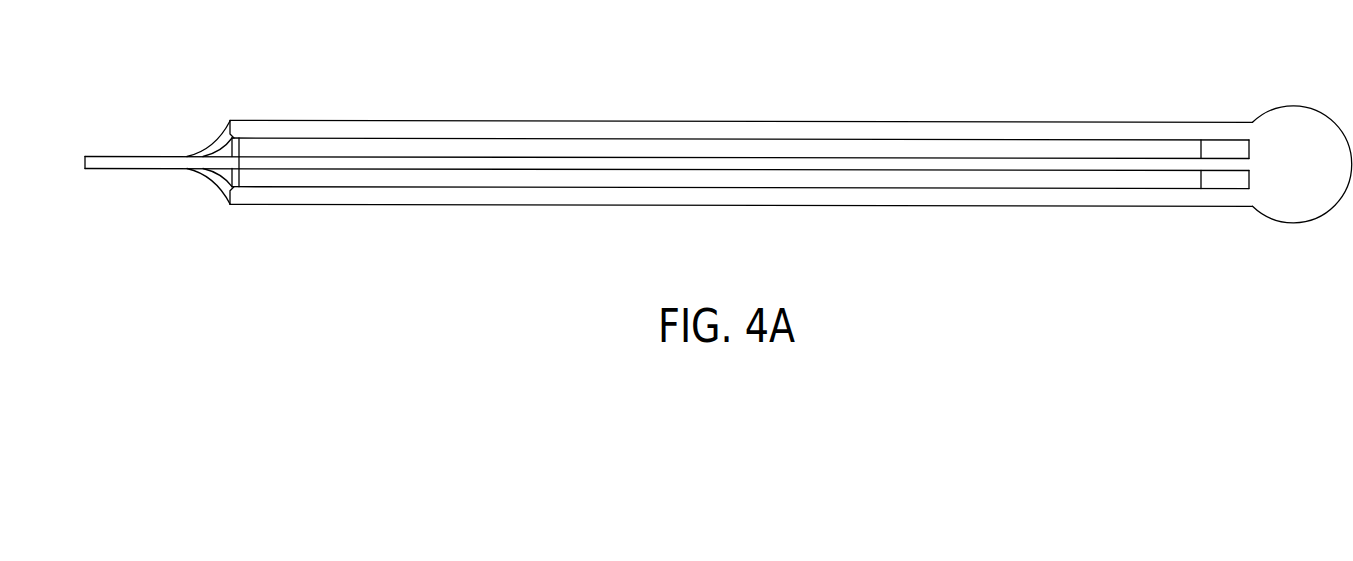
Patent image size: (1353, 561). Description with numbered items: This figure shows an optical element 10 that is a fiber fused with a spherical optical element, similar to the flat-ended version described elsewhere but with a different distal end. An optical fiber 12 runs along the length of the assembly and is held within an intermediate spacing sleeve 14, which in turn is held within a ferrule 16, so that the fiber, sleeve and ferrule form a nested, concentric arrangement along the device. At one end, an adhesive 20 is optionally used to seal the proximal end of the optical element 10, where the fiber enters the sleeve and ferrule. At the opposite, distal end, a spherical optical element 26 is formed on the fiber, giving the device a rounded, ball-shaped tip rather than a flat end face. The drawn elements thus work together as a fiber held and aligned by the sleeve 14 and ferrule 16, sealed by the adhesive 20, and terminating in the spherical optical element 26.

The optical element 10 is at (468, 237).
The optical fiber 12 is at (845, 166).
The intermediate spacing sleeve 14 is at (610, 138).
The ferrule 16 is at (382, 121).
The adhesive 20 is at (208, 143).
The spherical optical element 26 is at (1277, 227).